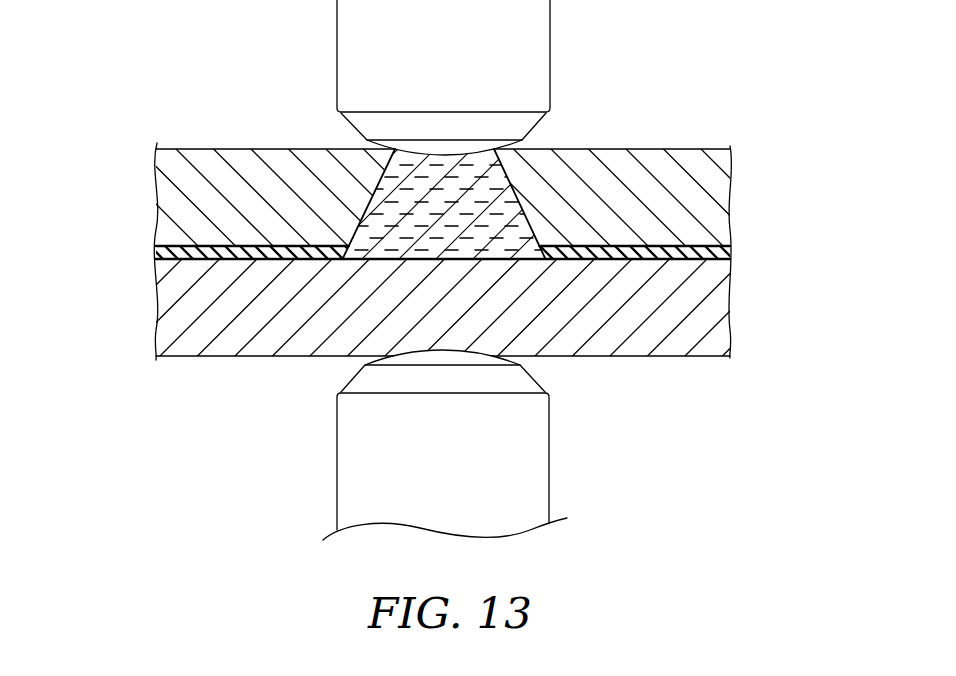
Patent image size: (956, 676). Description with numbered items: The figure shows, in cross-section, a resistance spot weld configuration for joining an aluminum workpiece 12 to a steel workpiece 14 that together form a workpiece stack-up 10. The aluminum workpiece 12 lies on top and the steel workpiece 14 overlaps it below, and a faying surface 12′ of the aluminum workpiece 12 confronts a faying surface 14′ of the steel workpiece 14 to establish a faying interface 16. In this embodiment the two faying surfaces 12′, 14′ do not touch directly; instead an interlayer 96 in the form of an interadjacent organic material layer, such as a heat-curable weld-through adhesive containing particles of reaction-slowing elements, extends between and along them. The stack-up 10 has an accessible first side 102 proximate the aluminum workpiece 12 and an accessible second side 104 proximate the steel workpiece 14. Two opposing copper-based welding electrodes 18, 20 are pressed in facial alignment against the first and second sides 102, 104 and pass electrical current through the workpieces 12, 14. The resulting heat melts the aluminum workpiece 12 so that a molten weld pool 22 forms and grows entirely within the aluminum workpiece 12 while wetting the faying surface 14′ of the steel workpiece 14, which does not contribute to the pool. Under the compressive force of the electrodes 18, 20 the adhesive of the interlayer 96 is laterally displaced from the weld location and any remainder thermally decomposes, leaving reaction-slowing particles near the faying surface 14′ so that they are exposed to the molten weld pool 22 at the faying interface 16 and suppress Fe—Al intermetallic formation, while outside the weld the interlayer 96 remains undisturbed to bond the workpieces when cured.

The workpiece stack-up 10 is at (128, 180).
The aluminum workpiece 12 is at (710, 180).
The faying surface of the aluminum workpiece 12′ is at (707, 270).
The steel workpiece 14 is at (713, 300).
The faying surface of the steel workpiece 14′ is at (673, 246).
The faying interface 16 is at (311, 268).
The first welding electrode 18 is at (428, 47).
The second welding electrode 20 is at (458, 464).
The molten weld pool 22 is at (512, 188).
The interlayer 96 is at (157, 253).
The first side of the workpiece stack-up 102 is at (245, 148).
The second side of the workpiece stack-up 104 is at (218, 357).